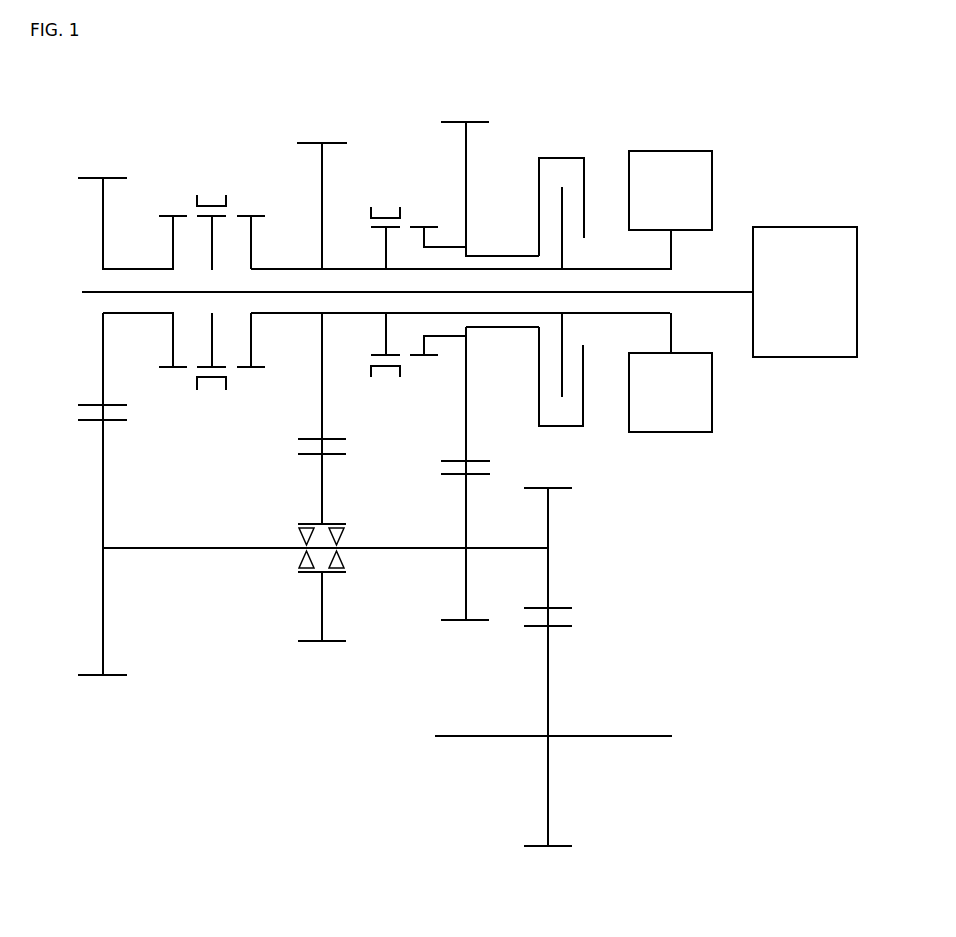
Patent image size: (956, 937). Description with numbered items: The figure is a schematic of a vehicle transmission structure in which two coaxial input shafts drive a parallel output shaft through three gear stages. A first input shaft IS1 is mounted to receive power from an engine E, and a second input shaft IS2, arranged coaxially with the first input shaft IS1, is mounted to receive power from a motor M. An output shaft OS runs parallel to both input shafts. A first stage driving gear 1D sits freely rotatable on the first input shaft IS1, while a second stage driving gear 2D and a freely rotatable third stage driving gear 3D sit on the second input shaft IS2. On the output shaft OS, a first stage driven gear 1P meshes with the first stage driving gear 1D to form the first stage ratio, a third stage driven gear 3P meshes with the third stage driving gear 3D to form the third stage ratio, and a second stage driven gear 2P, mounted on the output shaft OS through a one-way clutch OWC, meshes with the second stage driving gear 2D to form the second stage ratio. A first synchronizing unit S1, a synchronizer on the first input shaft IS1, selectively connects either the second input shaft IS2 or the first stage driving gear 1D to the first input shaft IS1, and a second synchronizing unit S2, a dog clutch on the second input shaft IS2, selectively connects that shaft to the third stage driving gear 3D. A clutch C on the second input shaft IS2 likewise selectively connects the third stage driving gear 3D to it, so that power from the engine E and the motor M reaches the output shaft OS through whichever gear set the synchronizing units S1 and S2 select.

The first input shaft IS1 is at (95, 289).
The second input shaft IS2 is at (299, 268).
The first stage driving gear 1D is at (132, 284).
The second stage driving gear 2D is at (322, 286).
The third stage driving gear 3D is at (474, 285).
The first stage driven gear 1P is at (102, 563).
The second stage driven gear 2P is at (322, 563).
The third stage driven gear 3P is at (465, 563).
The first synchronizing unit S1 is at (212, 202).
The second synchronizing unit S2 is at (387, 205).
The clutch C is at (563, 157).
The motor M is at (670, 291).
The engine E is at (805, 292).
The output shaft OS is at (209, 547).
The one-way clutch OWC is at (296, 563).